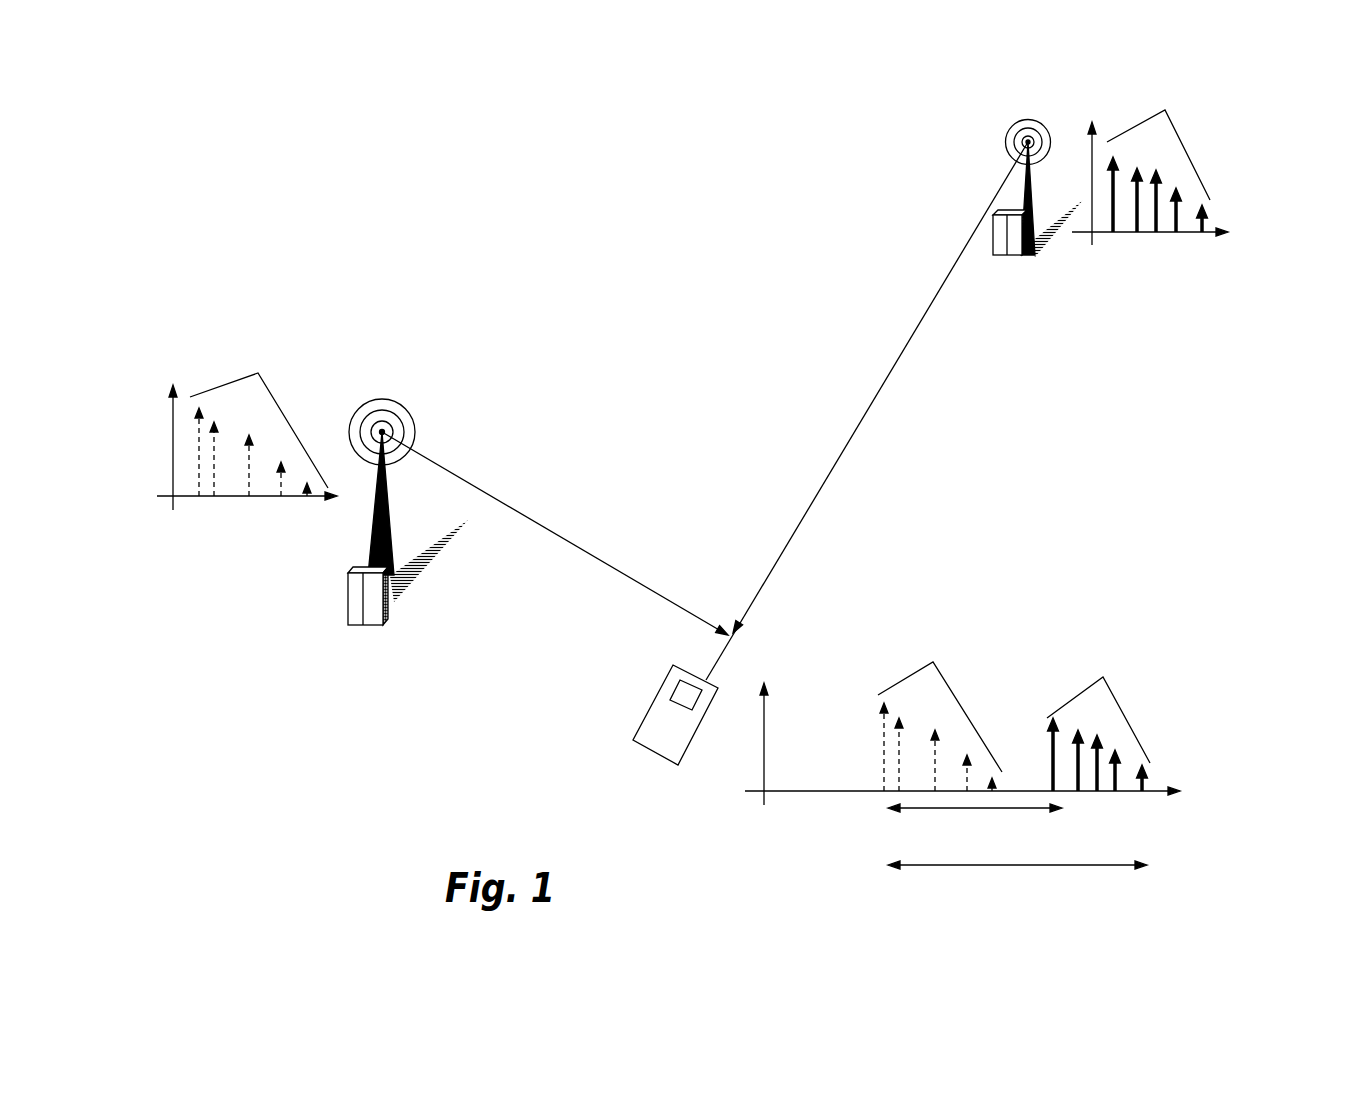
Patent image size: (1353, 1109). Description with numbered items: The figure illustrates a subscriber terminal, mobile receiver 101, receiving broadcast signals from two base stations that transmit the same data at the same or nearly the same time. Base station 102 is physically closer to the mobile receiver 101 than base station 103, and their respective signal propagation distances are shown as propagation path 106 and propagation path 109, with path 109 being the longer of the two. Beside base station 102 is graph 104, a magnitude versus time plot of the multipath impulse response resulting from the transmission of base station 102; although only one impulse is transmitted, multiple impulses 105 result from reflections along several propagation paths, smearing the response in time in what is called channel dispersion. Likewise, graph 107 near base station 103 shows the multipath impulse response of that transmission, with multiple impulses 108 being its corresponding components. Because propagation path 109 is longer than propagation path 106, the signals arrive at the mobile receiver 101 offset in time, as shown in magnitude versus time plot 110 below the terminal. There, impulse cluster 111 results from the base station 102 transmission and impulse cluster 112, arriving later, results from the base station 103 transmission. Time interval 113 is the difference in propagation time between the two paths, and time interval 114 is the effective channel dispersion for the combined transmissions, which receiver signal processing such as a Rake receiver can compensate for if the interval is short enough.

The mobile receiver 101 is at (663, 737).
The base station 102 is at (397, 597).
The base station 103 is at (1030, 256).
The graph 104 is at (183, 510).
The multiple impulses 105 is at (259, 414).
The signal propagation distance 106 is at (520, 502).
The graph 107 is at (1213, 245).
The multiple impulses 108 is at (1158, 138).
The signal propagation distance 109 is at (870, 402).
The magnitude versus time plot 110 is at (790, 798).
The impulse cluster 111 is at (940, 716).
The impulse cluster 112 is at (1098, 722).
The time interval 113 is at (953, 836).
The time interval 114 is at (997, 893).